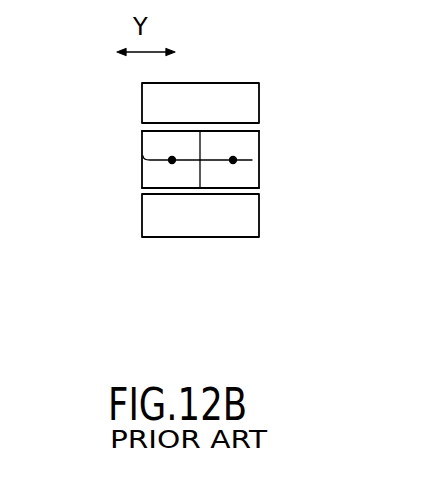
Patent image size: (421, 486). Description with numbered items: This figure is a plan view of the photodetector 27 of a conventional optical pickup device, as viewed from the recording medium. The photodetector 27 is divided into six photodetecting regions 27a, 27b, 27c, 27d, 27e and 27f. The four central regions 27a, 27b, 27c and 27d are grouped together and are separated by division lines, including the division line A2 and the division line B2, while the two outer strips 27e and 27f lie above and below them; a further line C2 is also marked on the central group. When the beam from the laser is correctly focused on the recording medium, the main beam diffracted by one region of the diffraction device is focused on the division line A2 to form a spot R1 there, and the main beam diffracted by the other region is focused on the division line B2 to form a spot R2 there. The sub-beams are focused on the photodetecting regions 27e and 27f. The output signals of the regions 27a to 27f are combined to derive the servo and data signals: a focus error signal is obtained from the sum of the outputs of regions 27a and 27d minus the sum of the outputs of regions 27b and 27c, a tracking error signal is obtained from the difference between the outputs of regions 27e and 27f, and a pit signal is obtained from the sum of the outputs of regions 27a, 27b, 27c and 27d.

The photodetector 27 is at (224, 350).
The photodetecting region 27a is at (143, 145).
The photodetecting region 27b is at (142, 186).
The photodetecting region 27c is at (260, 131).
The photodetecting region 27d is at (259, 177).
The photodetecting region 27e is at (260, 95).
The photodetecting region 27f is at (259, 223).
The division line A2 is at (143, 160).
The division line B2 is at (252, 160).
The center tap C2 is at (200, 172).
The spot R1 is at (173, 163).
The spot R2 is at (233, 158).